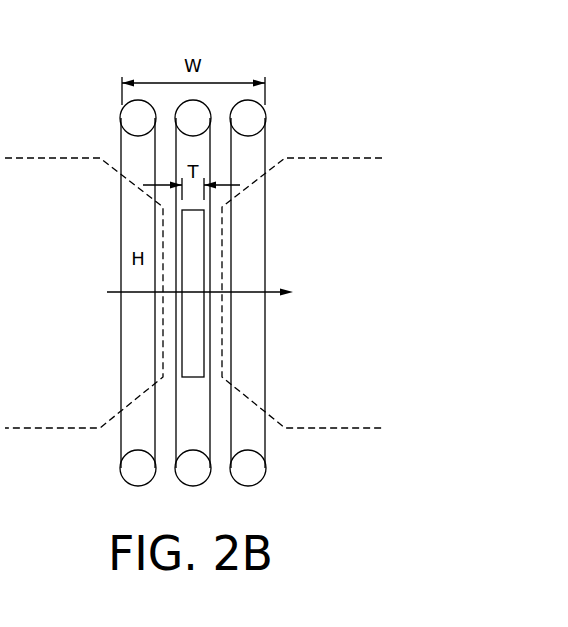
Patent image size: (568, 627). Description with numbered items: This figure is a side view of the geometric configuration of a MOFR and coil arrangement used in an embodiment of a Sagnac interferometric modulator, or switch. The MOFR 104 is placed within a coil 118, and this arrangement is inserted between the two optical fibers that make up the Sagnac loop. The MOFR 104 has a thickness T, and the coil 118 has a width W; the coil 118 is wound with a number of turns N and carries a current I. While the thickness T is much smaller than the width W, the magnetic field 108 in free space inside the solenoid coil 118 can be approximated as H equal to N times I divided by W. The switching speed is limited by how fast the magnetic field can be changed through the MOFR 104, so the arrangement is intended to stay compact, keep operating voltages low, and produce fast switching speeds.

The MOFR 104 is at (182, 243).
The magnetic field 108 is at (248, 290).
The coil 118 is at (287, 492).